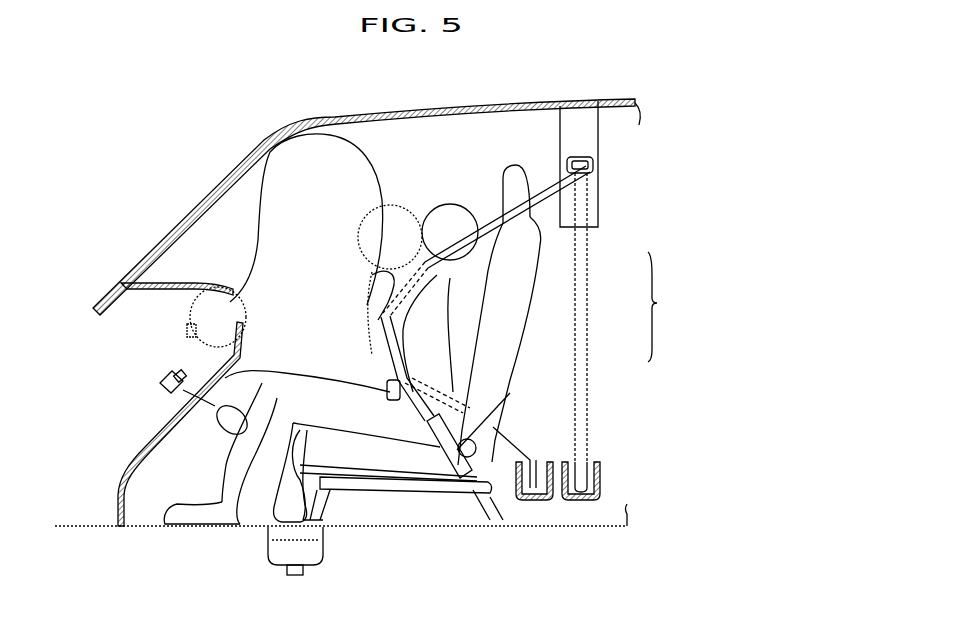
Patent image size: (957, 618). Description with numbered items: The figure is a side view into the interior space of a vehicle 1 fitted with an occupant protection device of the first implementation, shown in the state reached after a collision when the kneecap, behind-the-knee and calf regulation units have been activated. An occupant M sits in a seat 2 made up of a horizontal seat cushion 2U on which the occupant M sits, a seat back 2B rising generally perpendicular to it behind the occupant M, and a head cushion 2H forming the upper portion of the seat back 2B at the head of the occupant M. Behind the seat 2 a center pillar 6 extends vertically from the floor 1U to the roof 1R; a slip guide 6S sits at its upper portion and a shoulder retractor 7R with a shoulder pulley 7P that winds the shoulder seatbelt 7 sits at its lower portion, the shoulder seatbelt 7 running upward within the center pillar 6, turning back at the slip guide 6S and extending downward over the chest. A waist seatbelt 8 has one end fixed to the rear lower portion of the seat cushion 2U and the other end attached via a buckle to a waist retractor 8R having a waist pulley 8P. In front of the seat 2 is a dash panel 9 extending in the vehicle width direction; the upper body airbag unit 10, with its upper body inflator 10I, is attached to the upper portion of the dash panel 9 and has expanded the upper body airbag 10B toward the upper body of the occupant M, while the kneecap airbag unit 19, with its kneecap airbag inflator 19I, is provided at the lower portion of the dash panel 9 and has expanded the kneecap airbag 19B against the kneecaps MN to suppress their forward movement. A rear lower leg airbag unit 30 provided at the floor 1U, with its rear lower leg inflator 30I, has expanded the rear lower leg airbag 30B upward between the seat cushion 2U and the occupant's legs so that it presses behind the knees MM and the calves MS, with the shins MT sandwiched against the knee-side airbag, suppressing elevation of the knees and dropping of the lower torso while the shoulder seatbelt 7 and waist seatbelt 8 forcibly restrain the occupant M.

The vehicle 1 is at (436, 96).
The roof 1R is at (524, 97).
The floor 1U is at (400, 528).
The seat 2 is at (657, 307).
The head cushion 2H is at (537, 226).
The seat back 2B is at (510, 296).
The seat cushion 2U is at (390, 397).
The center pillar 6 is at (582, 143).
The slip guide 6S is at (595, 165).
The shoulder seatbelt 7 is at (478, 210).
The shoulder retractor 7R is at (600, 468).
The shoulder pulley 7P is at (600, 490).
The waist seatbelt 8 is at (424, 418).
The waist retractor 8R is at (537, 463).
The waist pulley 8P is at (493, 518).
The dash panel 9 is at (188, 286).
The upper body airbag unit 10 is at (183, 318).
The upper body airbag 10B is at (257, 234).
The upper body inflator 10I is at (186, 334).
The kneecap airbag unit 19 is at (156, 393).
The kneecap airbag inflator 19I is at (168, 376).
The kneecap airbag 19B is at (236, 464).
The rear lower leg airbag unit 30 is at (330, 556).
The rear lower leg airbag 30B is at (262, 528).
The rear lower leg inflator 30I is at (298, 576).
The occupant M is at (408, 205).
The behind the knees MM is at (299, 360).
The kneecaps MN is at (199, 424).
The shins MT is at (228, 457).
The calves MS is at (232, 477).